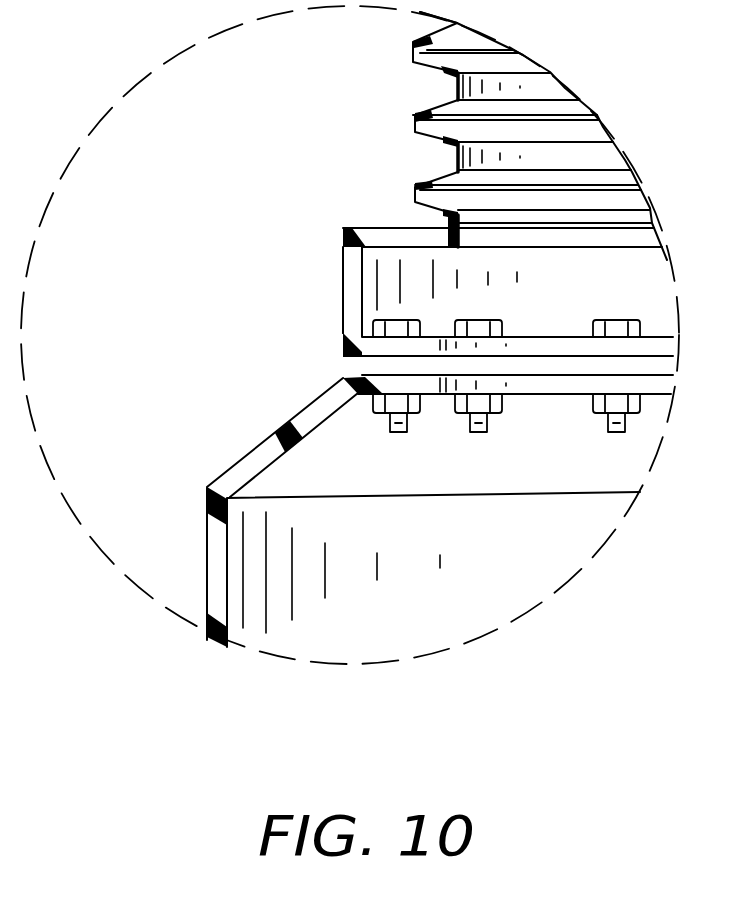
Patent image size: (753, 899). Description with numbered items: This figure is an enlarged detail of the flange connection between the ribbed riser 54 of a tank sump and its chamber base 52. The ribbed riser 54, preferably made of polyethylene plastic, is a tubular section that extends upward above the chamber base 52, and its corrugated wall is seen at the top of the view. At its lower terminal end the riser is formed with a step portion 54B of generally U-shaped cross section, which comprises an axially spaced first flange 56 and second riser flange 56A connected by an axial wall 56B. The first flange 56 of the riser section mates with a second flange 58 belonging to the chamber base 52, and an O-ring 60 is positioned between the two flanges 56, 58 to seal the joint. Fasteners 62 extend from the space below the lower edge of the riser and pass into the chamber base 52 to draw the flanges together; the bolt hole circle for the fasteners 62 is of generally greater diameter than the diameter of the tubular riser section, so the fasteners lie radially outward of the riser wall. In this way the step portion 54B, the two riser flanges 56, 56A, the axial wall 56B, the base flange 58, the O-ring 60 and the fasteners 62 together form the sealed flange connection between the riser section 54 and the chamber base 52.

The chamber base 52 is at (242, 475).
The ribbed riser 54 is at (413, 64).
The step portion 54B is at (343, 247).
The first flange 56 is at (387, 226).
The second riser flange 56A is at (407, 348).
The axial wall 56B is at (343, 317).
The second flange 58 is at (390, 428).
The O-ring 60 is at (362, 366).
The fasteners 62 is at (397, 320).